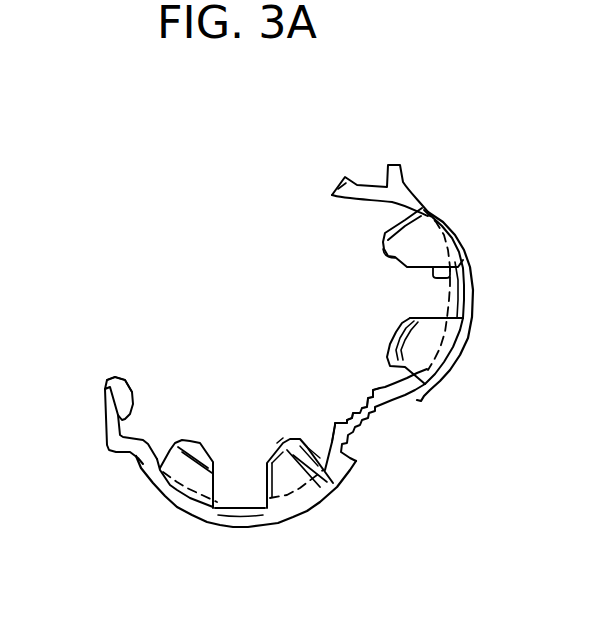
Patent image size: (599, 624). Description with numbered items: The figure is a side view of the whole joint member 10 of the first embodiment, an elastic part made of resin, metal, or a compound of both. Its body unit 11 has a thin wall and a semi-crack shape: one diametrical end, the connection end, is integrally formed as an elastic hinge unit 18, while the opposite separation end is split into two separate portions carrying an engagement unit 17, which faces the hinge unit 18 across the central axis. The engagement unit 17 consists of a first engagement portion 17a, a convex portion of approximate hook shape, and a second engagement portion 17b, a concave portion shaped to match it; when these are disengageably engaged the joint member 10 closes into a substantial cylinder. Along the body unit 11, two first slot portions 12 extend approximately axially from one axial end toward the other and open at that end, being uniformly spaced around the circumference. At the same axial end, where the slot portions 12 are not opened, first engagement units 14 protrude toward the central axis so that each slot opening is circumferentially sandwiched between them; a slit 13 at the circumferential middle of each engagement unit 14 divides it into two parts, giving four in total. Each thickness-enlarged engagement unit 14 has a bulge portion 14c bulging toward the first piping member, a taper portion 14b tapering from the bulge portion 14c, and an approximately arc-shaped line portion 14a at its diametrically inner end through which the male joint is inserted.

The joint member 10 is at (178, 523).
The body unit 11 is at (342, 442).
The first slot portion 12 is at (413, 208).
The slit 13 is at (447, 260).
The first engagement unit 14 is at (300, 490).
The line portion 14a is at (410, 264).
The taper portion 14b is at (413, 253).
The bulge portion 14c is at (428, 247).
The engagement unit 17 is at (97, 413).
The first engagement portion 17a is at (343, 183).
The second engagement portion 17b is at (107, 383).
The elastic hinge unit 18 is at (370, 422).